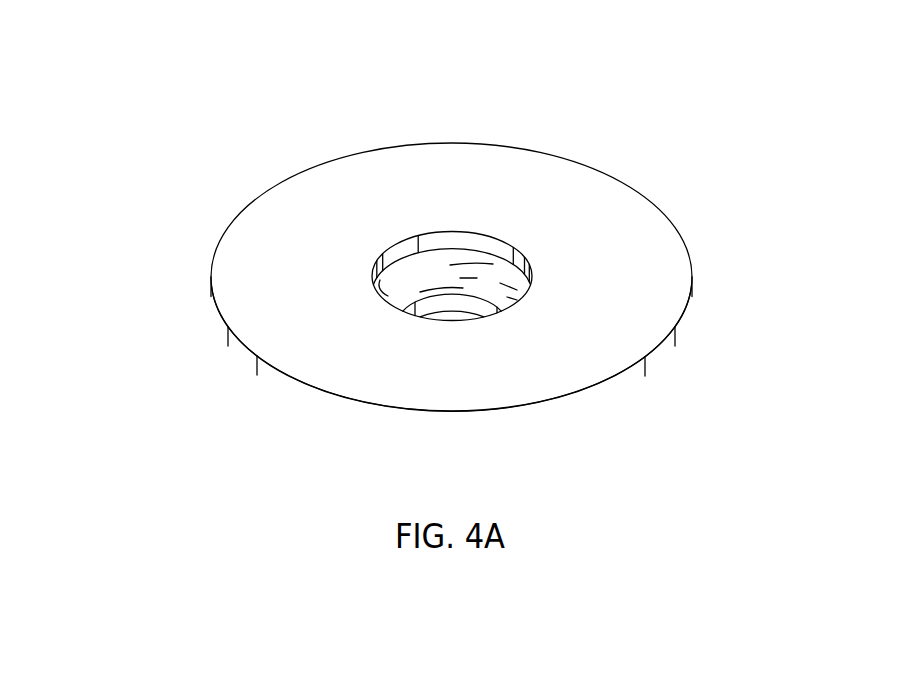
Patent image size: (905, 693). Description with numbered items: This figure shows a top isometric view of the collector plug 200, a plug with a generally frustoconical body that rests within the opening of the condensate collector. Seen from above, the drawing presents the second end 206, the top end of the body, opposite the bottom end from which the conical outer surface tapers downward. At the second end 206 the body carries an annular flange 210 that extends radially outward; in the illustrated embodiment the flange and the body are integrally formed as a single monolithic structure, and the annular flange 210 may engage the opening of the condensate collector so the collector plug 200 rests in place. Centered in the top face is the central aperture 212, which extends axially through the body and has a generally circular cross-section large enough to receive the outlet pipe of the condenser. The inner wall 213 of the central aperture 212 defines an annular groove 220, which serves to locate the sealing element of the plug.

The collector plug 200 is at (157, 63).
The second end 206 is at (657, 210).
The annular flange 210 is at (683, 330).
The central aperture 212 is at (522, 255).
The inner wall 213 is at (453, 238).
The annular groove 220 is at (408, 277).